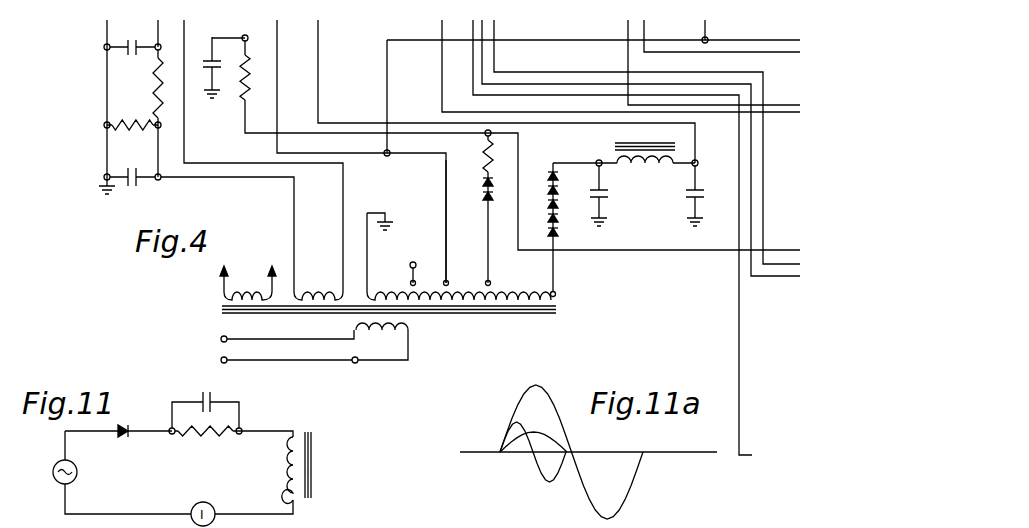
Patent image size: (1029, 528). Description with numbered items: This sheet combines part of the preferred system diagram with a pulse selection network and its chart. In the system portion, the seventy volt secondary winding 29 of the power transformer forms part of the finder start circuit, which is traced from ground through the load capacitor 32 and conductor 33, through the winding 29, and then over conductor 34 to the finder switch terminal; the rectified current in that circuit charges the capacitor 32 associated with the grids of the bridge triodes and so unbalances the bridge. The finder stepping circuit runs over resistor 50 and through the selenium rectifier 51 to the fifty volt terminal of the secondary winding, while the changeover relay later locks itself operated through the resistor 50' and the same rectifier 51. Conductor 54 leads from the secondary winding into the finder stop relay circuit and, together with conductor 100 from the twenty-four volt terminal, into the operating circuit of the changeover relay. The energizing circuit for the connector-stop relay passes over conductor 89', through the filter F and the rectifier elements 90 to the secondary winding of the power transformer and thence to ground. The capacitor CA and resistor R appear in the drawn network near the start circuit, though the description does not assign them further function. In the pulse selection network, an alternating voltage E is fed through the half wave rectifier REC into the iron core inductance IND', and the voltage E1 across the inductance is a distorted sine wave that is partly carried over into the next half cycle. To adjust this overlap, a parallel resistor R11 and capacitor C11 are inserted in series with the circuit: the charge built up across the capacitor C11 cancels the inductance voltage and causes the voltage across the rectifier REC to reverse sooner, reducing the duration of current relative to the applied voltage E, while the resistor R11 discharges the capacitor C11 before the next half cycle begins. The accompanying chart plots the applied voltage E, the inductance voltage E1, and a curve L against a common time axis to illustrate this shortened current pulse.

In FIG. 4, the capacitor CA is at (132, 61).
In FIG. 4, the resistor R is at (165, 87).
In FIG. 4, the resistor 50 is at (257, 70).
In FIG. 4, the resistor 50' is at (472, 154).
In FIG. 4, the conductor 89' is at (506, 91).
In FIG. 4, the conductor 100 is at (708, 33).
In FIG. 4, the conductor 34 is at (186, 159).
In FIG. 4, the load capacitor 32 is at (137, 187).
In FIG. 4, the conductor 33 is at (238, 180).
In FIG. 4, the seventy volt secondary winding 29 is at (322, 290).
In FIG. 4, the conductor 54 is at (444, 208).
In FIG. 4, the selenium rectifier 51 is at (484, 203).
In FIG. 4, the rectifier elements 90 is at (548, 205).
In FIG. 4, the filter F is at (628, 184).
In FIG. 11, the alternating voltage E is at (57, 472).
In FIG. 11A, the alternating voltage E is at (512, 408).
In FIG. 11, the half wave rectifier REC is at (122, 438).
In FIG. 11, the parallel resistor R11 is at (203, 438).
In FIG. 11, the capacitor C11 is at (210, 390).
In FIG. 11, the iron core inductance IND' is at (278, 468).
In FIG. 11A, the voltage across the inductance E1 is at (538, 464).
In FIG. 11A, the current curve L is at (551, 433).